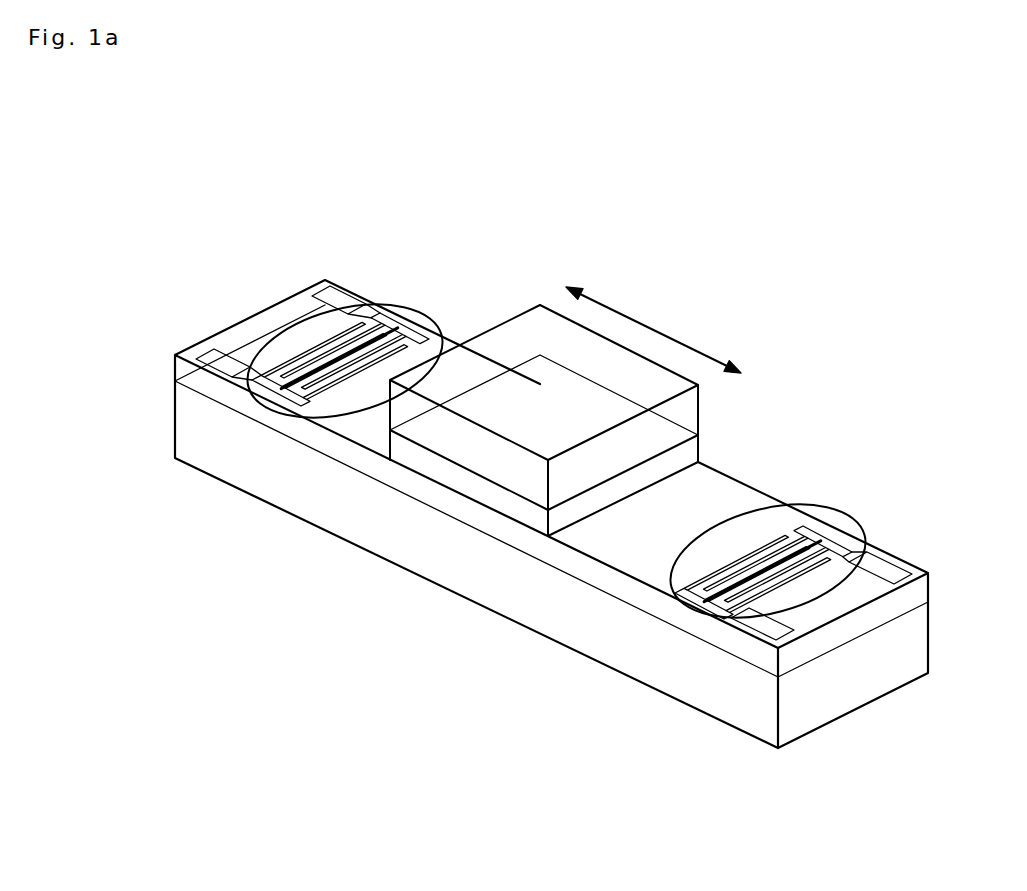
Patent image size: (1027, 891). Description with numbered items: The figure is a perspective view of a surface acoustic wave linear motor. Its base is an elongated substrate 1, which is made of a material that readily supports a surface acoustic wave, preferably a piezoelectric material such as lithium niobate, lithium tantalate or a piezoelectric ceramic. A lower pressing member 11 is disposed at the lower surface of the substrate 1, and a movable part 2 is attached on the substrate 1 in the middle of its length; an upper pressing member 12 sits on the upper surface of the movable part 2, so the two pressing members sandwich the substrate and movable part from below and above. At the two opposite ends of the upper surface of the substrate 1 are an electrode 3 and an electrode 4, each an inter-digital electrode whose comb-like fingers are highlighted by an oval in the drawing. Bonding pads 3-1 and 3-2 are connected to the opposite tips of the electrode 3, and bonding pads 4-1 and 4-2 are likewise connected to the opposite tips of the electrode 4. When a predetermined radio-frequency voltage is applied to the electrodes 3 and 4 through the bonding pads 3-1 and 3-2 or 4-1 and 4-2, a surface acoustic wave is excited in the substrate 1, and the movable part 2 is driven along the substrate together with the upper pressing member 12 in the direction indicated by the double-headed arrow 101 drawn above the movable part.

The substrate 1 is at (555, 548).
The lower pressing member 11 is at (605, 636).
The movable part 2 is at (517, 508).
The upper pressing member 12 is at (490, 460).
The electrode 3 is at (828, 510).
The bonding pad 3-1 is at (766, 628).
The bonding pad 3-2 is at (880, 563).
The electrode 4 is at (432, 308).
The bonding pad 4-1 is at (228, 372).
The bonding pad 4-2 is at (337, 300).
The arrow 101 is at (653, 330).